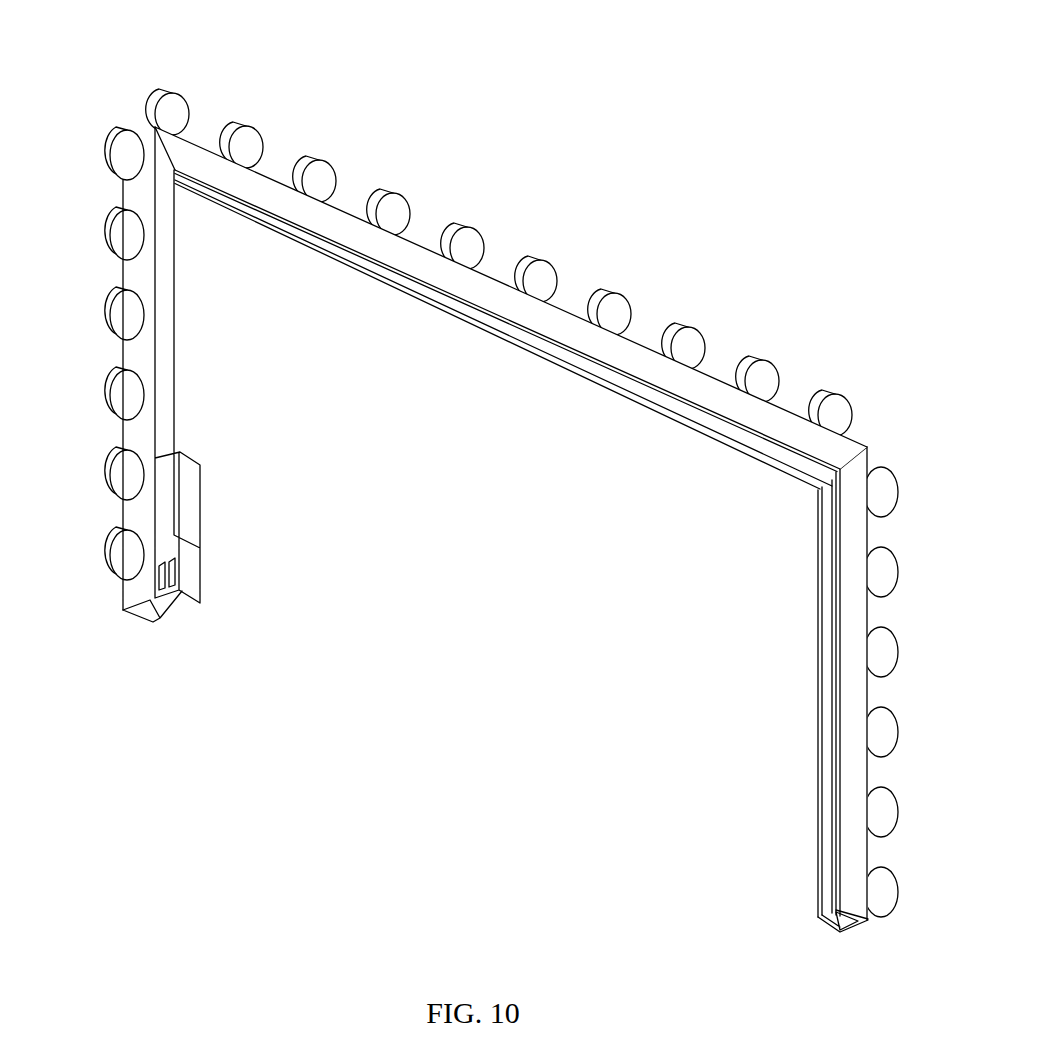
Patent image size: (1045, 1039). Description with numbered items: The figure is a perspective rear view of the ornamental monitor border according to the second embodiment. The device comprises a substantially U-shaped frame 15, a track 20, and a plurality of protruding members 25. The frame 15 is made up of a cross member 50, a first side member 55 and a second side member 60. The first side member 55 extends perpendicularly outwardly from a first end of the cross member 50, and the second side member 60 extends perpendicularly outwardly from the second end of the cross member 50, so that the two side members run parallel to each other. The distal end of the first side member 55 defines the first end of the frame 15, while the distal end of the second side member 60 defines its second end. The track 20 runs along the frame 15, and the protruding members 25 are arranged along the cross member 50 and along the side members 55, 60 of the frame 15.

The substantially U-shaped frame 15 is at (489, 490).
The track 20 is at (494, 330).
The protruding members 25 is at (690, 333).
The cross member 50 is at (511, 308).
The first side member 55 is at (865, 606).
The second side member 60 is at (136, 276).